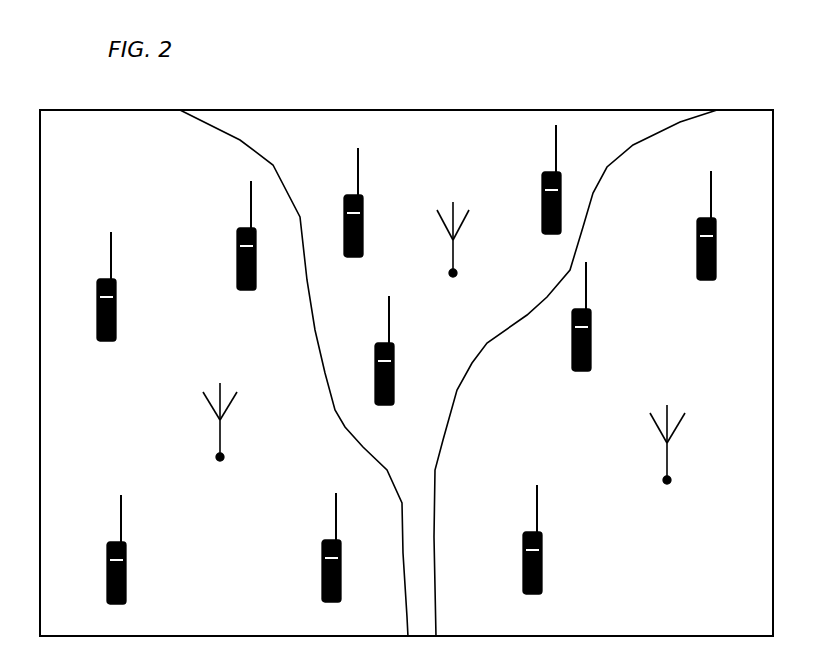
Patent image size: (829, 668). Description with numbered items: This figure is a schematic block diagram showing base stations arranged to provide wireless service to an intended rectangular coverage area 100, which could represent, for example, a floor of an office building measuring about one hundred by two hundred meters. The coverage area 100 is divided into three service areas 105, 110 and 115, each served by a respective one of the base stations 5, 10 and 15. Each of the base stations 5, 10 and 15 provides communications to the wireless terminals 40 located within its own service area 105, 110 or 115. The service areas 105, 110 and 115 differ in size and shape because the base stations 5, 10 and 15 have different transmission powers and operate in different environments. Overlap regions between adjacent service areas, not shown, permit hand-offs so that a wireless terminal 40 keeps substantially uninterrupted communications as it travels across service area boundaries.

The coverage area 100 is at (356, 86).
The service area 105 is at (182, 181).
The service area 110 is at (575, 373).
The service area 115 is at (497, 159).
The base station 5 is at (226, 412).
The base station 10 is at (672, 437).
The base station 15 is at (459, 233).
The wireless terminal 40 is at (117, 323).